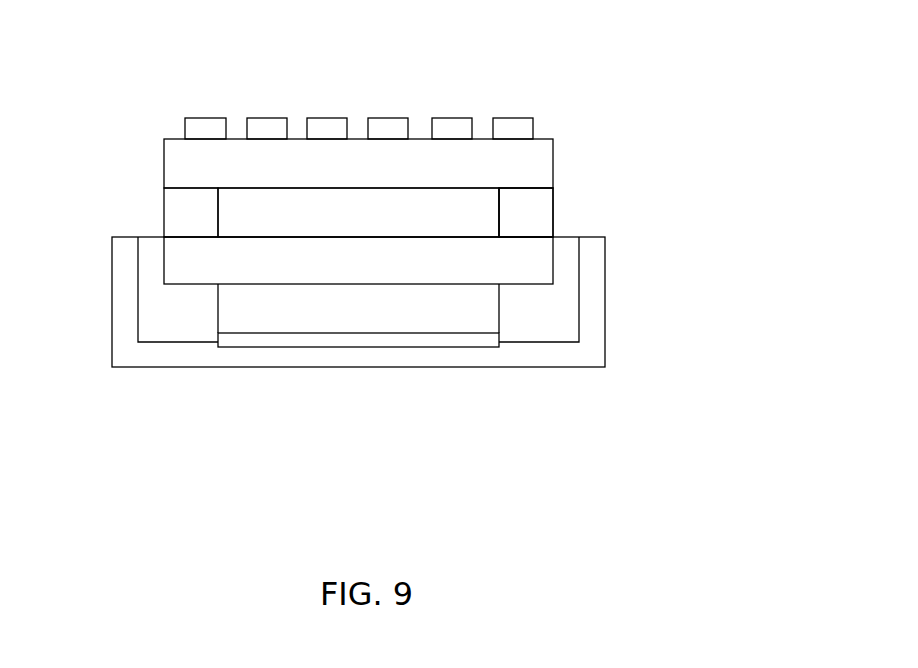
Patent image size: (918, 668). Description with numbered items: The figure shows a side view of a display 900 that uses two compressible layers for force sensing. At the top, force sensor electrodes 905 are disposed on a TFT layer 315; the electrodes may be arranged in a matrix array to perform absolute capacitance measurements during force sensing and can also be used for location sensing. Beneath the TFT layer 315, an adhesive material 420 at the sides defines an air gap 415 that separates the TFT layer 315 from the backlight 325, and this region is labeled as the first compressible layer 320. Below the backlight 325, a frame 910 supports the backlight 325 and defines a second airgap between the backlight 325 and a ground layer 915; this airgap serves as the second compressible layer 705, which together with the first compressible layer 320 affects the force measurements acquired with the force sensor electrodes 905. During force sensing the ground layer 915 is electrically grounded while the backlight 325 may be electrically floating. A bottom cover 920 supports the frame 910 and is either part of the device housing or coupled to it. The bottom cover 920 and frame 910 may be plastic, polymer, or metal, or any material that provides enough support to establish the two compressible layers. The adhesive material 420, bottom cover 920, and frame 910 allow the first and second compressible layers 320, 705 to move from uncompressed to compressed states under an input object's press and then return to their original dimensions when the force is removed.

The display 900 is at (152, 55).
The force sensor electrodes 905 is at (556, 139).
The TFT layer 315 is at (435, 172).
The air gap 415 is at (436, 221).
The adhesive material 420 is at (182, 220).
The first compressible layer 320 is at (612, 187).
The backlight 325 is at (435, 269).
The second compressible layer 705 is at (478, 308).
The ground layer 915 is at (295, 342).
The frame 910 is at (177, 333).
The bottom cover 920 is at (477, 357).